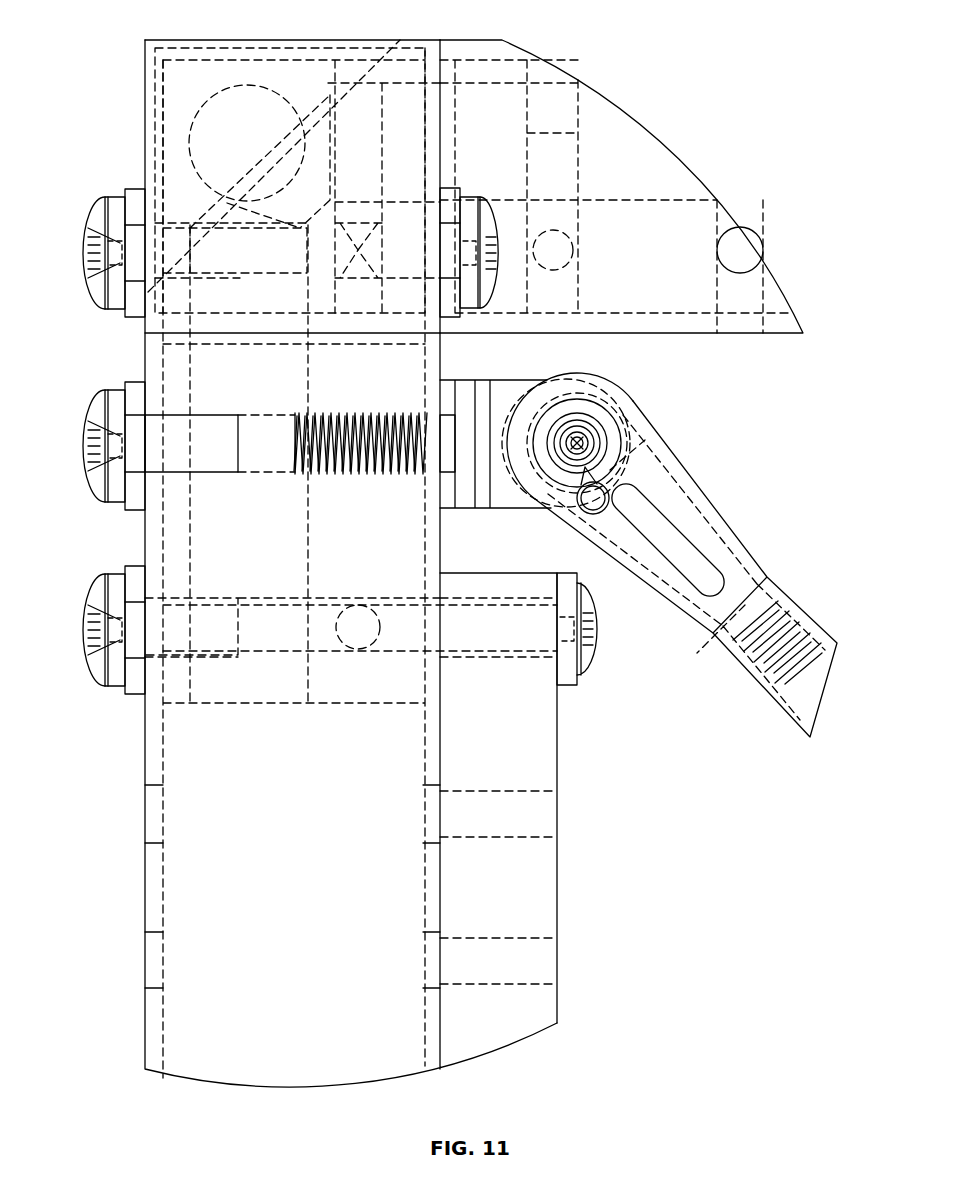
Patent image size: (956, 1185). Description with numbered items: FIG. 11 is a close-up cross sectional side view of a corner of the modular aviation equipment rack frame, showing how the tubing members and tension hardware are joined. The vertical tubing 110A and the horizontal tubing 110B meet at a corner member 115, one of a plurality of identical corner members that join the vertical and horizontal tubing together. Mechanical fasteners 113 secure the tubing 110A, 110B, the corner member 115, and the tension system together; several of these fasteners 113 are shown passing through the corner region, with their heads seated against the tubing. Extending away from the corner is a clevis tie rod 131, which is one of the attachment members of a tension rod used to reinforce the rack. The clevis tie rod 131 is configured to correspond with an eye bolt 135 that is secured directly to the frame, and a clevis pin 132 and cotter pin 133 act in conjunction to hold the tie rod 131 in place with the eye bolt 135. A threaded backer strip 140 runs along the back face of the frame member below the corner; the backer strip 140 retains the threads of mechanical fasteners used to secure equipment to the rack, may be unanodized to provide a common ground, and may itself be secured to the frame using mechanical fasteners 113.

The vertical tubing 110A is at (145, 912).
The horizontal tubing 110B is at (645, 118).
The mechanical fastener 113 is at (88, 462).
The corner member 115 is at (235, 38).
The clevis tie rod 131 is at (733, 538).
The clevis pin 132 is at (595, 437).
The cotter pin 133 is at (637, 483).
The eye bolt 135 is at (498, 378).
The threaded backer strip 140 is at (558, 898).